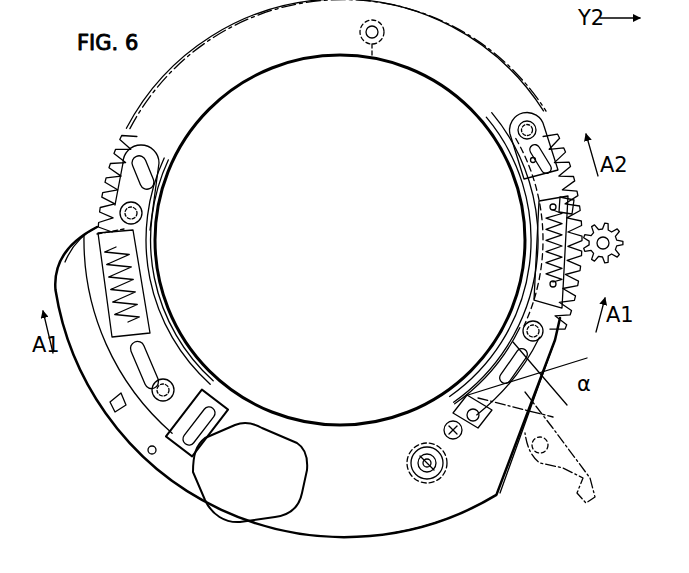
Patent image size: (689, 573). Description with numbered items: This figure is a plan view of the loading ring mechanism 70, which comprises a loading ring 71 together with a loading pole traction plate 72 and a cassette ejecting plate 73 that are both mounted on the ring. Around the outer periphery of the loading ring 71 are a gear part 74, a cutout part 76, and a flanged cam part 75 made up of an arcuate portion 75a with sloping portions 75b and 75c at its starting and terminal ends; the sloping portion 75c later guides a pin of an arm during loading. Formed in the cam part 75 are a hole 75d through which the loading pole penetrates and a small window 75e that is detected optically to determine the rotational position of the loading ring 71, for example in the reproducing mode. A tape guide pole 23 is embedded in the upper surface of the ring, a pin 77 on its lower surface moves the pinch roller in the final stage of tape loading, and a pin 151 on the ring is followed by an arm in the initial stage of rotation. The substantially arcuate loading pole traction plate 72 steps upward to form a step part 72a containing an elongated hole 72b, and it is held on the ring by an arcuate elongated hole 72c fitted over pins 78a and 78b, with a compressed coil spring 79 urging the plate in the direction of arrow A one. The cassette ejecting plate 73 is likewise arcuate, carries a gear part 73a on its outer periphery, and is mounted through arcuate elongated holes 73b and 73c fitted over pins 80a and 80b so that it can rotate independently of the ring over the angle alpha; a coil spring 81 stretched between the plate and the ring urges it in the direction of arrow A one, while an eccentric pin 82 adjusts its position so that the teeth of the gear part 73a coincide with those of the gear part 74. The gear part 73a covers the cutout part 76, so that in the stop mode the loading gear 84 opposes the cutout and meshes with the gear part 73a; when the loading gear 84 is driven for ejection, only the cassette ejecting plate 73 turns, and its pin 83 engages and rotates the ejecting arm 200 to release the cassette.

The loading ring mechanism 70 is at (531, 47).
The loading ring 71 is at (227, 27).
The loading pole traction plate 72 is at (159, 321).
The step part 72a is at (152, 362).
The elongated hole 72b is at (220, 407).
The arcuate elongated hole 72c is at (145, 181).
The cassette ejecting plate 73 is at (478, 378).
The gear part 73a is at (576, 206).
The arcuate elongated hole 73b is at (532, 161).
The arcuate elongated hole 73c is at (522, 353).
The gear part 74 is at (557, 128).
The cam part 75 is at (186, 496).
The arcuate portion 75a is at (435, 525).
The sloping portion 75b is at (72, 254).
The sloping portion 75c is at (503, 472).
The hole 75d is at (307, 470).
The small window 75e is at (110, 403).
The cutout part 76 is at (556, 268).
The pin 77 is at (371, 57).
The pin 78a is at (142, 214).
The pin 78b is at (174, 388).
The compressed coil spring 79 is at (133, 273).
The pin 80a is at (518, 136).
The pin 80b is at (524, 326).
The coil spring 81 is at (552, 248).
The eccentric pin 82 is at (451, 423).
The pin 83 is at (478, 433).
The loading gear 84 is at (622, 230).
The pin 151 is at (146, 456).
The ejecting arm 200 is at (553, 418).
The tape guide pole 23 is at (425, 487).